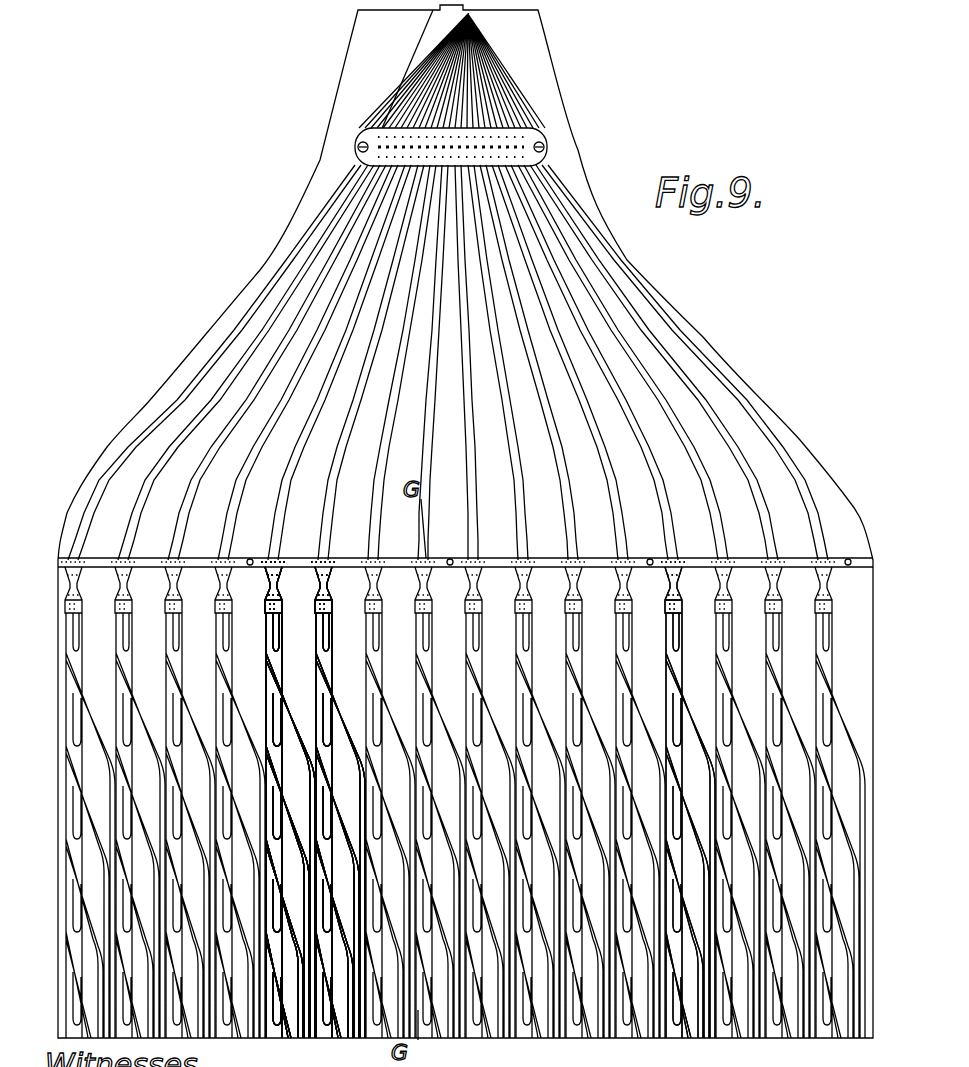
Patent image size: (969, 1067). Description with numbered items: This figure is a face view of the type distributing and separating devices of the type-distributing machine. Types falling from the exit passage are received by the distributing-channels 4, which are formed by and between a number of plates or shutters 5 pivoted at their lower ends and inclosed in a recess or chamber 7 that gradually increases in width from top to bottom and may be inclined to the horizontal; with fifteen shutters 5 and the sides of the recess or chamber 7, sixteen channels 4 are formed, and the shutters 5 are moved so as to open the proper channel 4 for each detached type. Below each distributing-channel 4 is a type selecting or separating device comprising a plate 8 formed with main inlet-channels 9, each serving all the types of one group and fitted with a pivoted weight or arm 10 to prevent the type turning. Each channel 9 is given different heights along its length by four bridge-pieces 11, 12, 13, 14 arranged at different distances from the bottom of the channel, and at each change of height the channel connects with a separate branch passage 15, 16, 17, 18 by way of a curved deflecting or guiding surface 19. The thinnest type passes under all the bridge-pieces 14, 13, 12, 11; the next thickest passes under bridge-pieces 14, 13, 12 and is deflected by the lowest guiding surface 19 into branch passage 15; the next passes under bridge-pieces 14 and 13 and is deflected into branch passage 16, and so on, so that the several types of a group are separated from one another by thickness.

The distributing-channels 4 is at (415, 98).
The plates or shutters 5 is at (487, 77).
The recess or chamber 7 is at (432, 36).
The plate 8 is at (537, 128).
The main inlet-channels 9 is at (428, 308).
The pivoted weight or arm 10 is at (325, 603).
The bridge-piece 11 is at (503, 800).
The bridge-piece 12 is at (505, 800).
The bridge-piece 13 is at (265, 768).
The bridge-piece 14 is at (273, 690).
The branch passage 15 is at (463, 800).
The branch passage 16 is at (630, 916).
The branch passage 17 is at (688, 800).
The branch passage 18 is at (355, 810).
The deflecting or guiding surfaces 19 is at (335, 722).